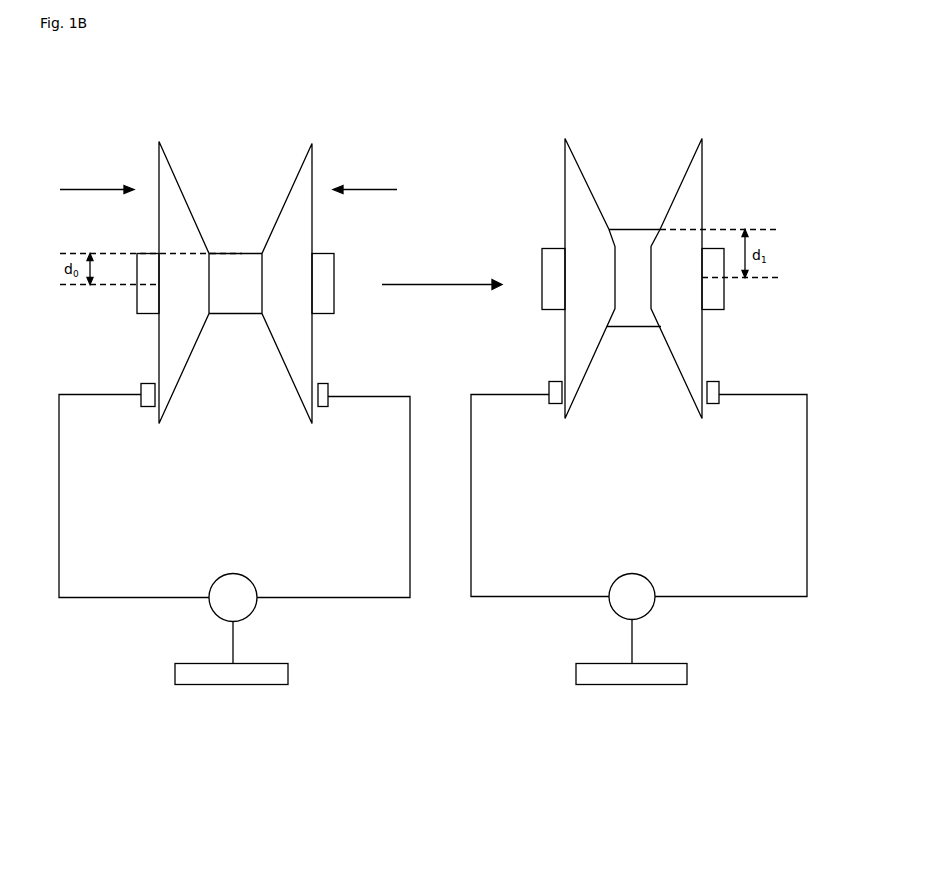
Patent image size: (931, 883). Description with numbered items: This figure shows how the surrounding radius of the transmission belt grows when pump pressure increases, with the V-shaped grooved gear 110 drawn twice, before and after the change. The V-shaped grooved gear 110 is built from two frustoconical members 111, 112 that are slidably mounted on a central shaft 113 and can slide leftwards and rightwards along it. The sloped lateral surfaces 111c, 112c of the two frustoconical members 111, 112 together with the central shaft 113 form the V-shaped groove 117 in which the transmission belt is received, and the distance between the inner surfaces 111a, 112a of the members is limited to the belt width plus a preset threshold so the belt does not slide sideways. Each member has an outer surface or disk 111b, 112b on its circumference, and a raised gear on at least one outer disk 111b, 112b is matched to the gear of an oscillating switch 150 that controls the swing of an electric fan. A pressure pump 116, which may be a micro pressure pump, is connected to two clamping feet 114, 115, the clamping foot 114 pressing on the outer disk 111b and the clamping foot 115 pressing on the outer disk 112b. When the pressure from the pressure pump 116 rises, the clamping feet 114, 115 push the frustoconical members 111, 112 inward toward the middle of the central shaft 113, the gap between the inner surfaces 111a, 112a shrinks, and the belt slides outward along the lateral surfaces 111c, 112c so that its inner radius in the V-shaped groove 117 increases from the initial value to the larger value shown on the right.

The V-shaped grooved gear 110 is at (140, 420).
The frustoconical member 111 is at (160, 152).
The inner surface 111a is at (208, 316).
The outer surface or disk 111b is at (157, 176).
The lateral surface 111c is at (172, 176).
The frustoconical member 112 is at (308, 160).
The inner surface 112a is at (259, 316).
The outer surface or disk 112b is at (312, 175).
The lateral surface 112c is at (292, 178).
The central shaft 113 is at (330, 258).
The clamping foot 114 is at (139, 388).
The clamping foot 115 is at (326, 388).
The pressure pump 116 is at (210, 609).
The V-shaped groove 117 is at (248, 216).
The oscillating switch 150 is at (258, 662).